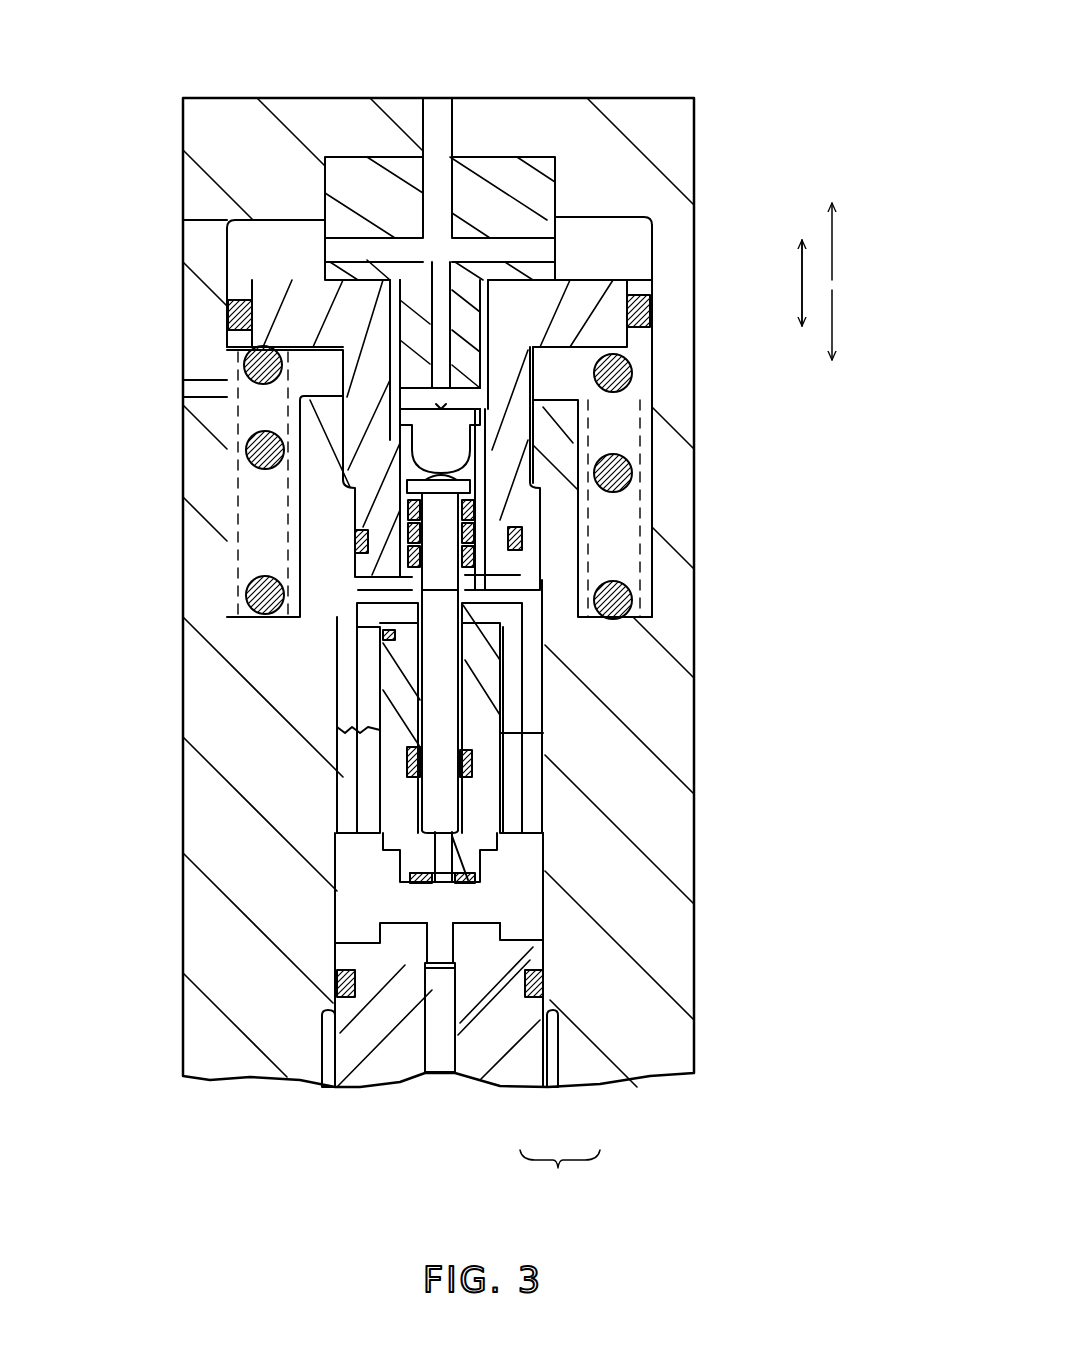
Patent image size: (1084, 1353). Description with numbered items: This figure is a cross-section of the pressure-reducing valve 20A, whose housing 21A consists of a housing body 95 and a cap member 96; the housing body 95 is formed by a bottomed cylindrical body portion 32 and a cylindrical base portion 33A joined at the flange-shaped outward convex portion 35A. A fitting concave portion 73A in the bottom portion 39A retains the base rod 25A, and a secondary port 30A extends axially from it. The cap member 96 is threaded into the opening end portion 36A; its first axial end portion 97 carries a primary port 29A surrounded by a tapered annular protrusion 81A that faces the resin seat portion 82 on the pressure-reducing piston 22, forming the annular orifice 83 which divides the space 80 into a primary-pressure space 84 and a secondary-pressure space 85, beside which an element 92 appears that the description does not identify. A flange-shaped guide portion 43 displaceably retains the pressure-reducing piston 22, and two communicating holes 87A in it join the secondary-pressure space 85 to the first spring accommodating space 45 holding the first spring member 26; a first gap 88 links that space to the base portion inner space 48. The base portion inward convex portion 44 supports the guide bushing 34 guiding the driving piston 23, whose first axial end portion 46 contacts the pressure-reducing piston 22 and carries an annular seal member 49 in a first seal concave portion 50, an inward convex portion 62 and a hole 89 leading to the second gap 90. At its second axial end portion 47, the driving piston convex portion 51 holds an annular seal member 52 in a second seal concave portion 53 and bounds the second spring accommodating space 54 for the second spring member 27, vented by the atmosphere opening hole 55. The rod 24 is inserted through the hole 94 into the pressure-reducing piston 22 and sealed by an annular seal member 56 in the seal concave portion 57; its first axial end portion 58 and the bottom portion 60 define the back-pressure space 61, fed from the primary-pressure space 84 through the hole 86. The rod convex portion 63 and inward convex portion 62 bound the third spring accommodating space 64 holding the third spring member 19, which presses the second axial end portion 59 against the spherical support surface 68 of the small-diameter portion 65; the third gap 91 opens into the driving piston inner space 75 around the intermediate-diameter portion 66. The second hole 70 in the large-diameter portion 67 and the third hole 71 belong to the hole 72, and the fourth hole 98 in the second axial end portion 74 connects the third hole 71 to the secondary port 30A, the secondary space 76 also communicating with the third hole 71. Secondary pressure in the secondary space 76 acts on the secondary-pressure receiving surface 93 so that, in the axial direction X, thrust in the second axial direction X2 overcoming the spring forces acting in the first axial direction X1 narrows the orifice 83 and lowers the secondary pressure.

The pressure-reducing valve 20A is at (650, 50).
The bottom portion 39A is at (295, 210).
The fitting concave portion 73A is at (337, 150).
The secondary port 30A is at (455, 115).
The fourth hole 98 is at (527, 157).
The second axial end portion 74 is at (513, 165).
The base rod 25A is at (556, 180).
The large-diameter portion 67 is at (556, 190).
The hole 72 is at (490, 240).
The second hole 70 is at (556, 246).
The secondary-pressure receiving surface 93 is at (252, 280).
The secondary space 76 is at (305, 274).
The third hole 71 is at (428, 318).
The intermediate-diameter portion 66 is at (476, 302).
The driving piston inner space 75 is at (493, 336).
The guide bushing 34 is at (548, 412).
The small-diameter portion 65 is at (490, 440).
The support surface 68 is at (439, 465).
The second axial end portion 59 is at (480, 480).
The third gap 91 is at (478, 490).
The rod convex portion 63 is at (415, 560).
The third spring member 19 is at (472, 523).
The hole 89 is at (487, 575).
The third spring accommodating space 64 is at (443, 579).
The first seal concave portion 50 is at (537, 532).
The first axial end portion 46 is at (537, 597).
The second gap 90 is at (470, 608).
The first gap 88 is at (337, 607).
The inward convex portion 62 is at (400, 672).
The pressure-reducing piston 22 is at (387, 668).
The annular seal member 49 is at (353, 550).
The base portion inner space 48 is at (350, 582).
The base portion inward convex portion 44 is at (353, 517).
The second spring accommodating space 54 is at (240, 527).
The atmosphere opening hole 55 is at (183, 392).
The driving piston convex portion 51 is at (233, 292).
The annular seal member 52 is at (230, 318).
The second axial end portion 47 is at (613, 287).
The second seal concave portion 53 is at (657, 307).
The driving piston 23 is at (640, 333).
The body portion 32 is at (694, 372).
The second spring member 27 is at (640, 473).
The first spring member 26 is at (548, 636).
The rod 24 is at (455, 680).
The first spring accommodating space 45 is at (370, 713).
The hole 94 is at (404, 748).
The annular seal member 56 is at (473, 760).
The seal concave portion 57 is at (473, 767).
The guide portion 43 is at (373, 798).
The first axial end portion 58 is at (427, 820).
The bottom portion 60 is at (457, 835).
The back-pressure space 61 is at (432, 845).
The hole 86 is at (453, 866).
The seat portion 82 is at (480, 882).
The secondary-pressure space 85 is at (526, 904).
The orifice 83 is at (463, 900).
The wall 92 is at (545, 887).
The first axial end portion 97 is at (530, 942).
The communicating holes 87A is at (538, 803).
The space 80 is at (345, 940).
The primary-pressure space 84 is at (430, 907).
The annular protrusion 81A is at (466, 922).
The primary port 29A is at (440, 1070).
The outward convex portion 35A is at (200, 1068).
The first axial end portion 36A is at (262, 1068).
The cap member 96 is at (541, 1075).
The housing body 95 is at (577, 1075).
The housing 21A is at (560, 1171).
The base portion 33A is at (694, 737).
The axial direction X is at (802, 288).
The first axial direction X1 is at (834, 245).
The second axial direction X2 is at (834, 315).